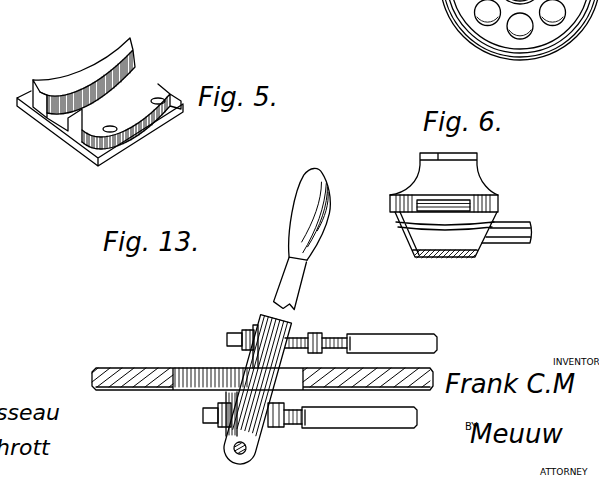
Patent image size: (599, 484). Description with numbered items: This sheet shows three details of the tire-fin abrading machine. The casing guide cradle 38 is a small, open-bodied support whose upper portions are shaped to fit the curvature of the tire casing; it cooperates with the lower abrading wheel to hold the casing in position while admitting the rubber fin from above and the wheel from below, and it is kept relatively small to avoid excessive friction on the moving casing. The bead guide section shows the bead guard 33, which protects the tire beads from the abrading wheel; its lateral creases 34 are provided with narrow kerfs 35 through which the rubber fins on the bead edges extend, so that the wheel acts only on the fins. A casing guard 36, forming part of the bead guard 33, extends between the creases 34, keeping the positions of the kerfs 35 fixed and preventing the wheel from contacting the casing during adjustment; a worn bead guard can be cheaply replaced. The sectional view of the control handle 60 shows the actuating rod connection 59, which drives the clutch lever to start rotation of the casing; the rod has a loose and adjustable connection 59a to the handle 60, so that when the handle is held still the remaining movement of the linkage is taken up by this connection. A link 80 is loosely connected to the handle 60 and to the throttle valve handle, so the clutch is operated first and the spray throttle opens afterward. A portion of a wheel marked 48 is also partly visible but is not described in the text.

In FIG. 5, the casing guide cradle 38 is at (90, 62).
In FIG. 6, the wheel 48 is at (444, 5).
In FIG. 6, the bead guard 33 is at (427, 181).
In FIG. 6, the lateral creases 34 is at (494, 202).
In FIG. 6, the narrow kerfs 35 is at (453, 202).
In FIG. 6, the casing guard 36 is at (445, 257).
In FIG. 13, the actuating rod connection 59 is at (389, 342).
In FIG. 13, the loose and adjustable connection 59a is at (318, 332).
In FIG. 13, the control handle 60 is at (302, 208).
In FIG. 13, the link 80 is at (364, 418).